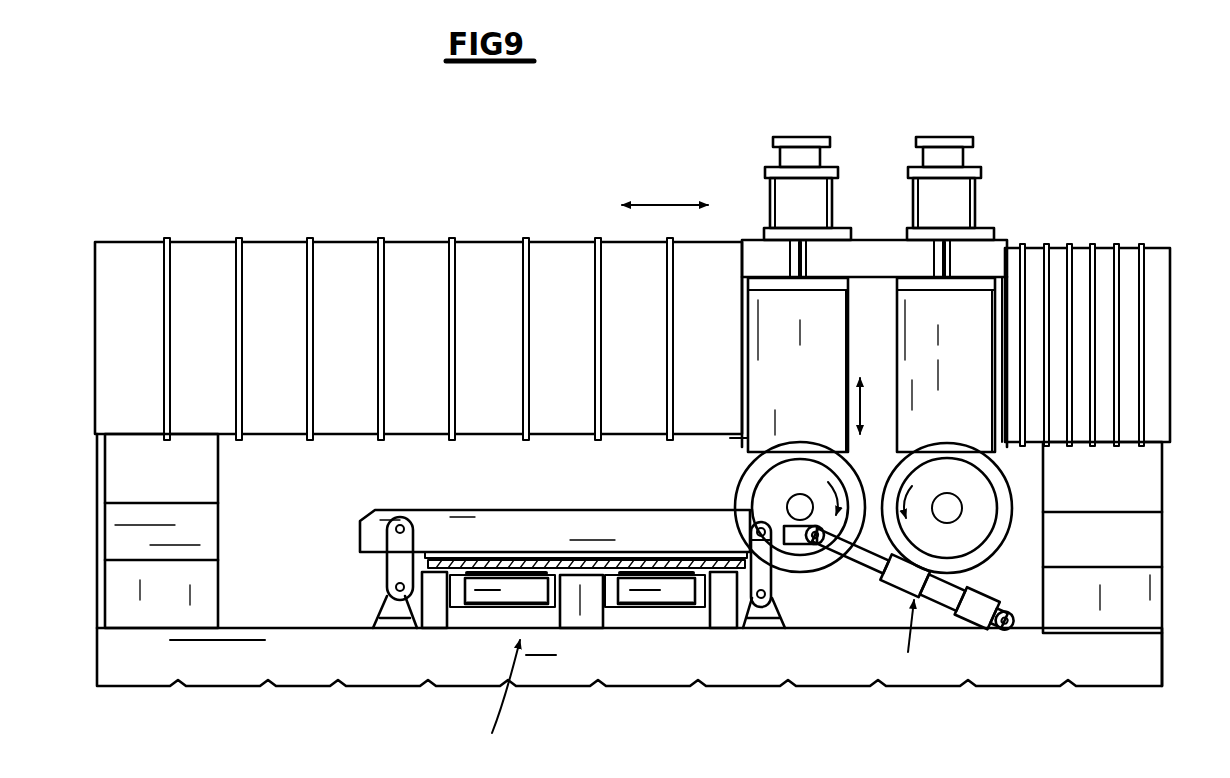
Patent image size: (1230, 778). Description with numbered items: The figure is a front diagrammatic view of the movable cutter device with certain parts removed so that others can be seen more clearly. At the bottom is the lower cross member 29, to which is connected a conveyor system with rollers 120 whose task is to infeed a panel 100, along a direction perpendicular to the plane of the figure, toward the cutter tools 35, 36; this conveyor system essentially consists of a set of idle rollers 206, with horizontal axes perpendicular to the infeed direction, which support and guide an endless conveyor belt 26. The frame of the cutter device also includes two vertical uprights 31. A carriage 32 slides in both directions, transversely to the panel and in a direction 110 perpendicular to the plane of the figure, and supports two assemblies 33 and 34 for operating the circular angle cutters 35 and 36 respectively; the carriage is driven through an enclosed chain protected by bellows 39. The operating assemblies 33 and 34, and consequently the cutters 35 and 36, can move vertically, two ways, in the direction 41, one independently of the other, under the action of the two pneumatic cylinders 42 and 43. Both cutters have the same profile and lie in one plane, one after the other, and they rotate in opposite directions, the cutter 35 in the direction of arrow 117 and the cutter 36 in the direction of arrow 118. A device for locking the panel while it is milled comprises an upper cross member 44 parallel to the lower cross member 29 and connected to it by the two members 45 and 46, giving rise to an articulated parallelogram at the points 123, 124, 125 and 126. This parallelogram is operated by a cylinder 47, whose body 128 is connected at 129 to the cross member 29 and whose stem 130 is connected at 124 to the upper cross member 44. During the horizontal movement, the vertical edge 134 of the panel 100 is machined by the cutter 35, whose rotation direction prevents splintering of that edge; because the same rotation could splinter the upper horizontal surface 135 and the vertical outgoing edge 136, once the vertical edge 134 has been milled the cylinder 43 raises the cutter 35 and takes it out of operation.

The endless conveyor belt 26 is at (478, 583).
The lower cross member 29 is at (962, 693).
The vertical uprights 31 is at (113, 518).
The carriage 32 is at (862, 258).
The operating assembly 33 is at (765, 329).
The operating assembly 34 is at (968, 324).
The circular cutter 35 is at (778, 503).
The circular cutter 36 is at (962, 508).
The bellows 39 is at (270, 414).
The vertical direction 41 is at (878, 406).
The pneumatic cylinder 42 is at (972, 152).
The pneumatic cylinder 43 is at (776, 150).
The upper cross member 44 is at (597, 508).
The member 45 is at (361, 526).
The member 46 is at (761, 550).
The cylinder 47 is at (913, 642).
The panel 100 is at (712, 605).
The direction 110 is at (665, 187).
The arrow 117 is at (722, 452).
The arrow 118 is at (1012, 474).
The rollers 120 is at (518, 702).
The articulation point 123 is at (752, 607).
The articulation point 124 is at (757, 526).
The articulation point 125 is at (401, 526).
The articulation point 126 is at (386, 612).
The cylinder body 128 is at (921, 610).
The connection point 129 is at (1003, 627).
The stem 130 is at (876, 555).
The vertical edge 134 is at (750, 556).
The upper horizontal surface 135 is at (505, 556).
The vertical outgoing edge 136 is at (425, 560).
The idle rollers 206 is at (492, 595).